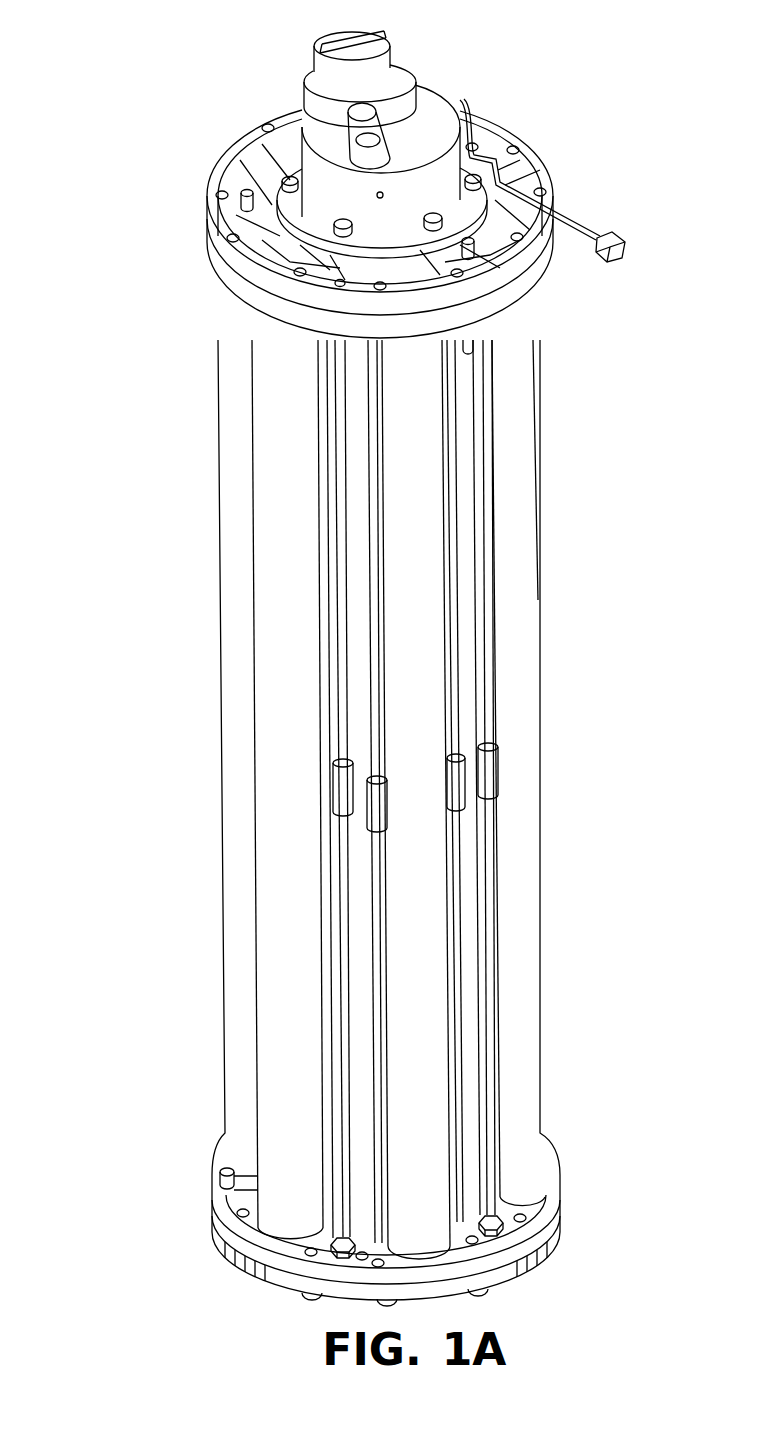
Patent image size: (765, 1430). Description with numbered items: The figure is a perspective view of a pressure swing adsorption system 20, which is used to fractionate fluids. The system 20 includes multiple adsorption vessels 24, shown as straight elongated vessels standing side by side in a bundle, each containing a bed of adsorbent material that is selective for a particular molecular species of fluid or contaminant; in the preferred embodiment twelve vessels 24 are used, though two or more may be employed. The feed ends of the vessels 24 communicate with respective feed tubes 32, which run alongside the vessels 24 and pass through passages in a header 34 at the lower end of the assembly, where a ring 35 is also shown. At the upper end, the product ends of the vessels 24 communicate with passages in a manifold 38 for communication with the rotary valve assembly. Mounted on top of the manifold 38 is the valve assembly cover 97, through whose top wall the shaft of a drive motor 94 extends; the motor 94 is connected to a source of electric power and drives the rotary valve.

The pressure swing adsorption system 20 is at (135, 687).
The adsorption vessel 24 is at (540, 945).
The feed tube 32 is at (493, 815).
The header 34 is at (555, 1162).
The bottom ring 35 is at (548, 1238).
The manifold 38 is at (218, 148).
The drive motor 94 is at (388, 38).
The valve assembly cover 97 is at (437, 108).